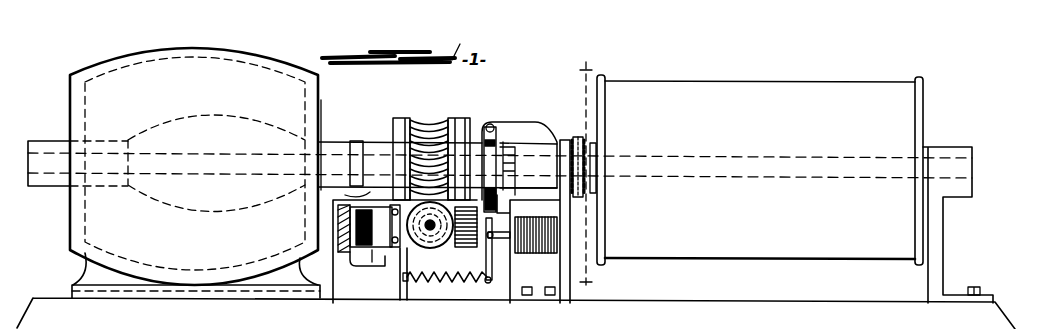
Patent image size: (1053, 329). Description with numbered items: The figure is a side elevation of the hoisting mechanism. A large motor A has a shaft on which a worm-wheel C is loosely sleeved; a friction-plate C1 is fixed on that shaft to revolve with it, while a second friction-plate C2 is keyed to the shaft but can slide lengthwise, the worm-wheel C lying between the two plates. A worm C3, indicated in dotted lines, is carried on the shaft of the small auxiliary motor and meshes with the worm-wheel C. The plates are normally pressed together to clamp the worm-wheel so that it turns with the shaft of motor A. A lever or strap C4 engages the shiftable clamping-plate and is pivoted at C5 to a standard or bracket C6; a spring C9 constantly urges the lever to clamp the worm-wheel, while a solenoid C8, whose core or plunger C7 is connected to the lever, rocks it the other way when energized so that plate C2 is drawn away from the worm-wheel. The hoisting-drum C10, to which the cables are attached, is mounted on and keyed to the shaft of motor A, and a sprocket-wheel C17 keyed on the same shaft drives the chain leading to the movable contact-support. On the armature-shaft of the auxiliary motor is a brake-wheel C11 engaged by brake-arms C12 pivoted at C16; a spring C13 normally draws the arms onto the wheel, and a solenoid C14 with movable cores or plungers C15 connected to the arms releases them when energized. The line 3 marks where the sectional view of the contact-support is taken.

The large motor A is at (232, 128).
The worm-wheel C is at (432, 121).
The friction-plate C1 is at (398, 118).
The second friction-plate C2 is at (470, 119).
The worm C3 is at (392, 250).
The lever or strap C4 is at (478, 224).
The pivot C5 is at (496, 127).
The standard or bracket C6 is at (565, 220).
The core or plunger C7 is at (507, 241).
The solenoid C8 is at (535, 254).
The spring C9 is at (426, 281).
The hoisting-drum C10 is at (733, 89).
The brake-wheel C11 is at (433, 248).
The brake-arms C12 is at (360, 198).
The spring C13 is at (340, 208).
The solenoid C14 is at (356, 216).
The movable cores or plungers C15 is at (348, 247).
The pivot C16 is at (393, 200).
The sprocket-wheel C17 is at (584, 183).
The section line 3 3 is at (585, 176).